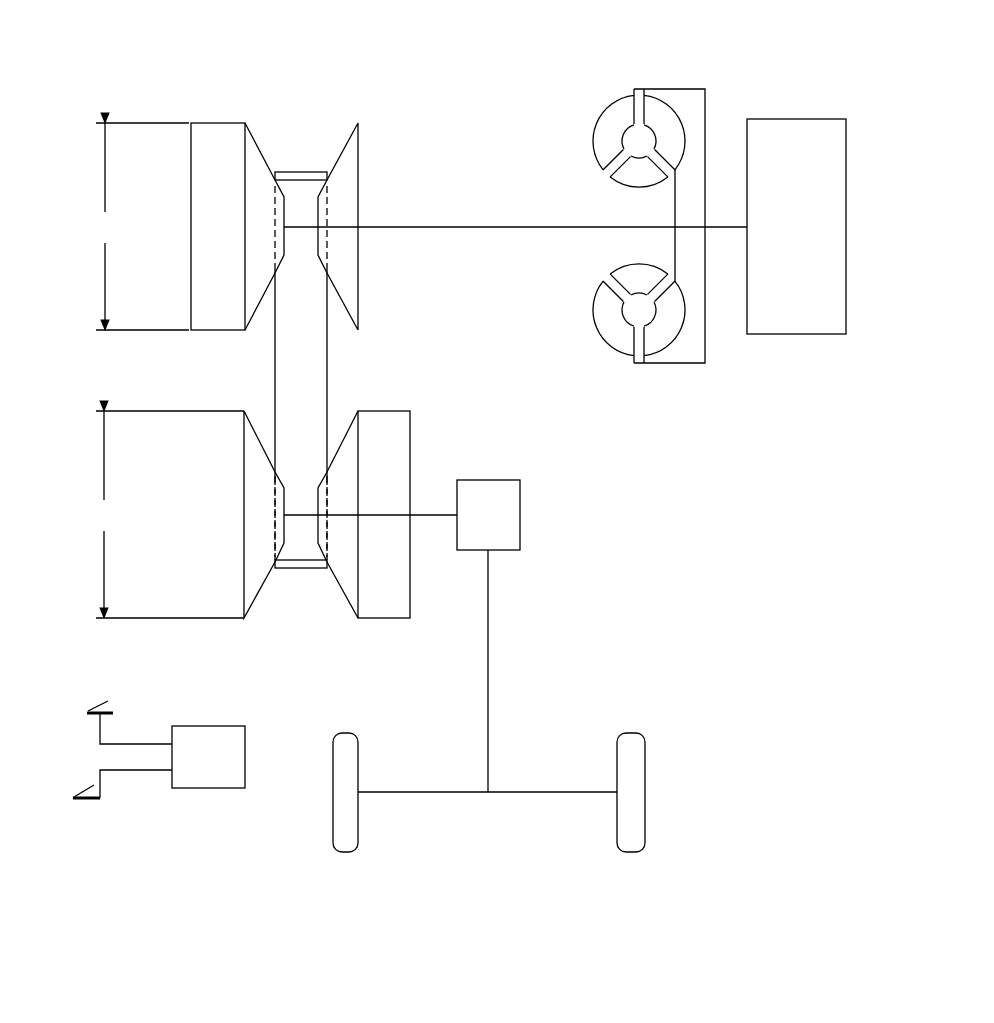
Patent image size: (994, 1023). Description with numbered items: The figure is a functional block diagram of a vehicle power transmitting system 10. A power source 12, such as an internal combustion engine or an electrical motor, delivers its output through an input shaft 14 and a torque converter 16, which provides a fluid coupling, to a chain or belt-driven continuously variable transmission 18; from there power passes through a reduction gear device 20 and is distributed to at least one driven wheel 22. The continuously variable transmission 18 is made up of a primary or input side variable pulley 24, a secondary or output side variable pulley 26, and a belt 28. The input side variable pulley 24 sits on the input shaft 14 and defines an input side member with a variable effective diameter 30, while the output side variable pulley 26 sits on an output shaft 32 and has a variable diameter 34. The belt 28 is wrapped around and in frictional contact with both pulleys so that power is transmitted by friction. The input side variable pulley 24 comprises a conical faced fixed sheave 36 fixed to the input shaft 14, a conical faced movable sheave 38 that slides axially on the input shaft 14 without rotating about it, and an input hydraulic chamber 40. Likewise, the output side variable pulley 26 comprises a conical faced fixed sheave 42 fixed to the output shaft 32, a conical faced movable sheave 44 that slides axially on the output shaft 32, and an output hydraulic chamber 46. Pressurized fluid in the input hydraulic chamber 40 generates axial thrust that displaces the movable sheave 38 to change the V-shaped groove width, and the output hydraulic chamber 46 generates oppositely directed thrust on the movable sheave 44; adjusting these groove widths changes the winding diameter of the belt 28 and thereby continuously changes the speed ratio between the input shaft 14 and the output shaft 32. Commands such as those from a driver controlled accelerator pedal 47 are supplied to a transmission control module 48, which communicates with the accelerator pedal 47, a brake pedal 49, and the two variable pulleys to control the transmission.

The vehicle power transmitting system 10 is at (778, 74).
The power source 12 is at (773, 334).
The input shaft 14 is at (723, 226).
The torque converter 16 is at (661, 70).
The continuously variable transmission 18 is at (402, 100).
The reduction gear device 20 is at (509, 532).
The driven wheel 22 is at (645, 762).
The input side variable pulley 24 is at (183, 201).
The output side variable pulley 26 is at (205, 490).
The belt 28 is at (293, 187).
The variable effective diameter 30 is at (142, 226).
The output shaft 32 is at (430, 517).
The variable diameter 34 is at (169, 514).
The fixed sheave 36 is at (347, 148).
The movable sheave 38 is at (259, 155).
The input hydraulic chamber 40 is at (197, 162).
The fixed sheave 42 is at (244, 450).
The movable sheave 44 is at (349, 572).
The output hydraulic chamber 46 is at (400, 428).
The accelerator pedal 47 is at (97, 706).
The transmission control module 48 is at (192, 736).
The brake pedal 49 is at (86, 790).